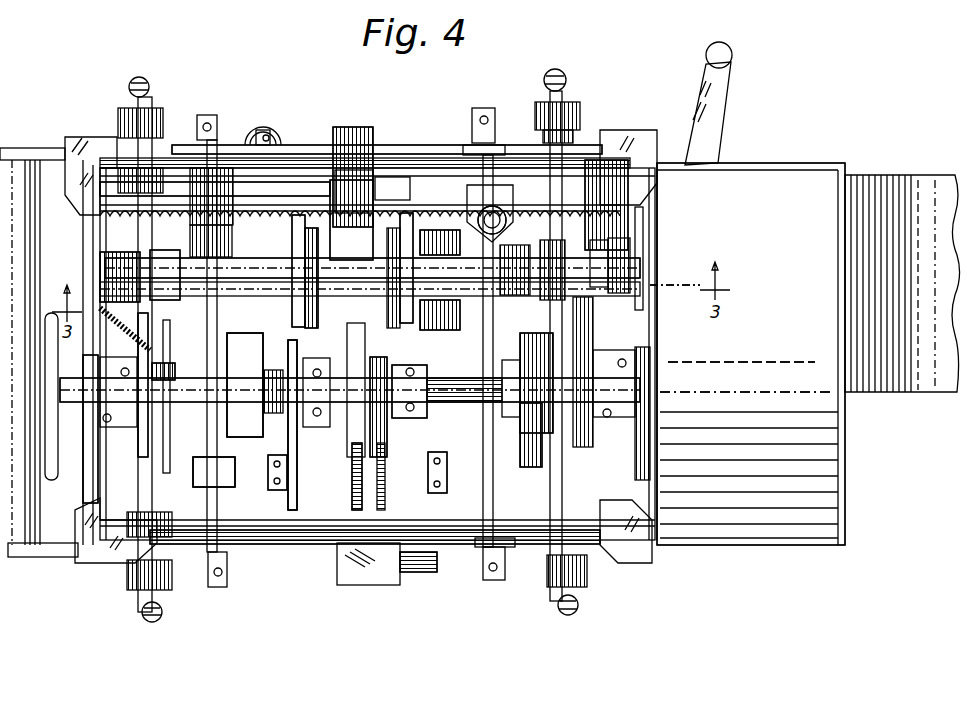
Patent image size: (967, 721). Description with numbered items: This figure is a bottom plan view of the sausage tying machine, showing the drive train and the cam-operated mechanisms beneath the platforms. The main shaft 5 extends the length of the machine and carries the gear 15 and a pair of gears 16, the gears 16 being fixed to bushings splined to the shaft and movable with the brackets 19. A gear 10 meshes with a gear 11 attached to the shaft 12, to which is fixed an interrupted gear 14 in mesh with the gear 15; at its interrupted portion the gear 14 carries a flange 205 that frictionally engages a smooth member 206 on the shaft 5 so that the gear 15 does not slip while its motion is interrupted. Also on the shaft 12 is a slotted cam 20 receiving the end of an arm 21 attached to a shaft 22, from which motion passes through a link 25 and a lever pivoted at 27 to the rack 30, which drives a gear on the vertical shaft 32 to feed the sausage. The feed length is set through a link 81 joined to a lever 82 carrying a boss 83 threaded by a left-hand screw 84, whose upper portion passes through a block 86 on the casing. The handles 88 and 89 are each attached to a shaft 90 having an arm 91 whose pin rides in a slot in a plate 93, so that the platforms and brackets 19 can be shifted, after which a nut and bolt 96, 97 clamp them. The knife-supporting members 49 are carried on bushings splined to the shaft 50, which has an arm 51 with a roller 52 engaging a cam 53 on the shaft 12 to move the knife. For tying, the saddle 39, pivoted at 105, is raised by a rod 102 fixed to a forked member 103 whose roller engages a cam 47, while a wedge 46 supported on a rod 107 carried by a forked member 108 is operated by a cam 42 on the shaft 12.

The handle 88 is at (146, 79).
The bolt 97 is at (205, 115).
The handle 89 is at (565, 72).
The shaft 90 is at (158, 135).
The arm 91 is at (130, 190).
The plate 93 is at (130, 165).
The link 81 is at (218, 160).
The boss 83 is at (268, 130).
The left-hand screw 84 is at (285, 137).
The lever 82 is at (318, 146).
The pivot 27 is at (358, 130).
The bracket 19 is at (403, 215).
The vertical shaft 32 is at (488, 205).
The nut 96 is at (560, 175).
The link 25 is at (262, 200).
The block 86 is at (335, 200).
The rack 30 is at (110, 215).
The shaft 50 is at (180, 265).
The knife-supporting member 49 is at (275, 258).
The rod 107 is at (455, 236).
The gear 15 is at (640, 210).
The smooth member 206 is at (645, 275).
The gear 10 is at (648, 300).
The flange 205 is at (645, 350).
The gear 11 is at (645, 380).
The arm 51 is at (100, 282).
The gear 16 is at (300, 310).
The roller 52 is at (168, 362).
The wedge 46 is at (293, 342).
The shaft 5 is at (478, 300).
The forked member 103 is at (420, 368).
The forked member 108 is at (310, 362).
The cam 53 is at (160, 405).
The shaft 22 is at (210, 395).
The arm 21 is at (200, 455).
The cam 20 is at (248, 450).
The saddle 39 is at (298, 430).
The cam 47 is at (290, 470).
The cam 42 is at (425, 470).
The shaft 12 is at (445, 405).
The rod 102 is at (435, 430).
The pivot 105 is at (292, 540).
The interrupted gear 14 is at (530, 470).